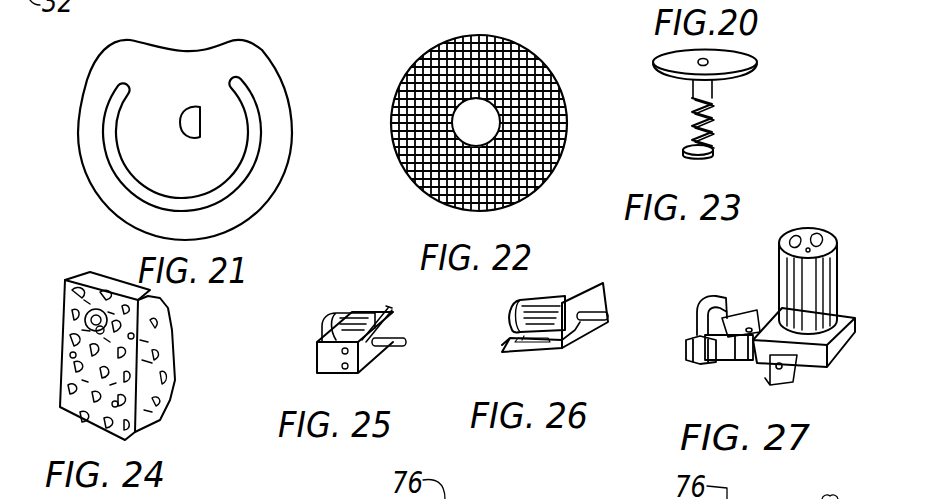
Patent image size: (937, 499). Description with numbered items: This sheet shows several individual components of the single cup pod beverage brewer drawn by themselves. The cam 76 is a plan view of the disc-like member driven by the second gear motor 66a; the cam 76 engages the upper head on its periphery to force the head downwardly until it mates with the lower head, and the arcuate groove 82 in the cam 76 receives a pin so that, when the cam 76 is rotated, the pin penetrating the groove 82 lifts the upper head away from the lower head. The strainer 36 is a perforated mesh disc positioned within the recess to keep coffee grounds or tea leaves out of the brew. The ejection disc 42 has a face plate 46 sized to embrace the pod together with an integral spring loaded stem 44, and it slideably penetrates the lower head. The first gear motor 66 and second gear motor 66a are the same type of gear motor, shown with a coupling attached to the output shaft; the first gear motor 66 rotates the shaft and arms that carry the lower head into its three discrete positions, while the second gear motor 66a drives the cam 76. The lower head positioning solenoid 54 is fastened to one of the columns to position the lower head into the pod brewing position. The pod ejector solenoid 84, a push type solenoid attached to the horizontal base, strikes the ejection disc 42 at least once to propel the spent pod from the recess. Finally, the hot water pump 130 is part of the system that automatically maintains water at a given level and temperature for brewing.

In FIG. 21, the cam 76 is at (85, 170).
In FIG. 21, the groove 82 is at (240, 186).
In FIG. 22, the strainer 36 is at (400, 80).
In FIG. 23, the face plate 46 is at (650, 60).
In FIG. 23, the ejection disc 42 is at (724, 120).
In FIG. 23, the spring loaded stem 44 is at (688, 130).
In FIG. 24, the first gear motor 66 is at (171, 356).
In FIG. 24, the second gear motor 66a is at (167, 322).
In FIG. 25, the lower head positioning solenoid 54 is at (405, 343).
In FIG. 26, the pod ejector solenoid 84 is at (607, 303).
In FIG. 27, the hot water pump 130 is at (842, 180).